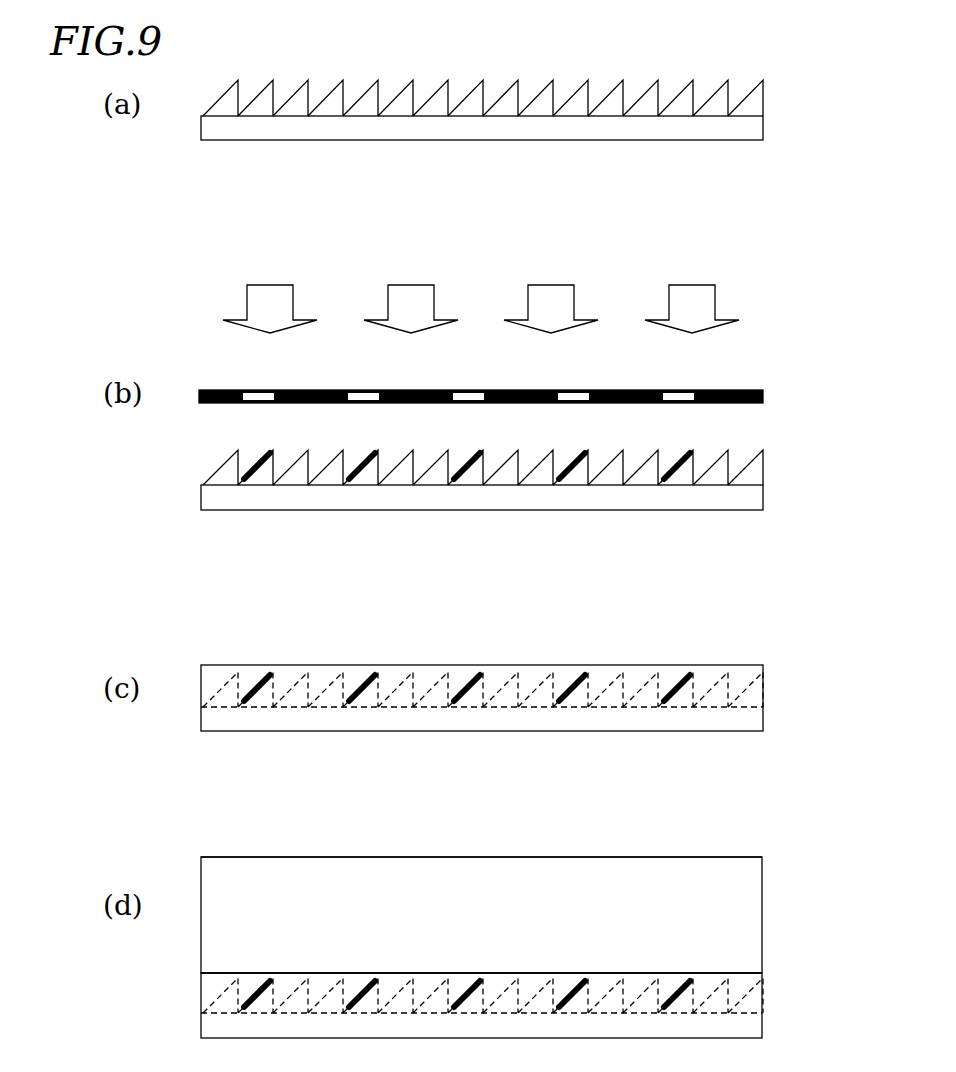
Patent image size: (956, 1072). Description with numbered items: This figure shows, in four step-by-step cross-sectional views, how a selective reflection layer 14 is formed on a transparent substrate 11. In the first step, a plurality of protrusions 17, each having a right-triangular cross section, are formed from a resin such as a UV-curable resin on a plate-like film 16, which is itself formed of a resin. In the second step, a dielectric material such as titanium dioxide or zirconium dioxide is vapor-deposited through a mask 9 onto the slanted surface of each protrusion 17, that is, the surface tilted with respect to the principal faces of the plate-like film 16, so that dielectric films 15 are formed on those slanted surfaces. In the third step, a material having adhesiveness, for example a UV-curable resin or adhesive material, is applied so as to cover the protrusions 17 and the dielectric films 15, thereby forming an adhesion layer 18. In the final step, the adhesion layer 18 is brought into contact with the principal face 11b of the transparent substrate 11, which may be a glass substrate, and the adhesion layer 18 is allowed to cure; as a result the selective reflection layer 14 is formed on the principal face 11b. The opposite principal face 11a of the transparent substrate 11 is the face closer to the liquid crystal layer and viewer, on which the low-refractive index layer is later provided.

The mask 9 is at (763, 393).
The transparent substrate 11 is at (755, 908).
The principal face 11a is at (600, 857).
The principal face 11b is at (535, 972).
The selective reflection layer 14 is at (766, 973).
The dielectric films 15 is at (675, 458).
The plate-like film 16 is at (757, 130).
The protrusions 17 is at (757, 100).
The adhesion layer 18 is at (738, 675).